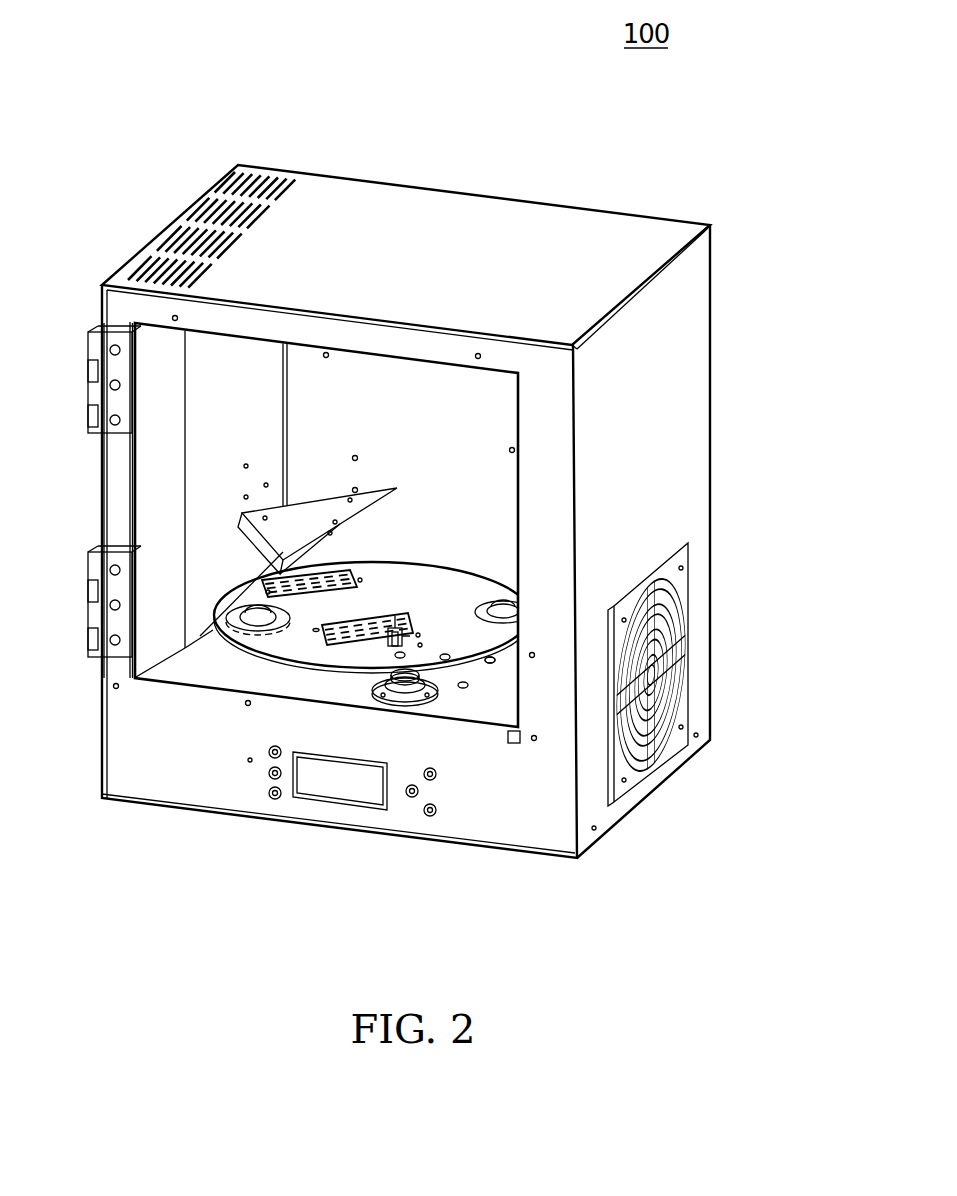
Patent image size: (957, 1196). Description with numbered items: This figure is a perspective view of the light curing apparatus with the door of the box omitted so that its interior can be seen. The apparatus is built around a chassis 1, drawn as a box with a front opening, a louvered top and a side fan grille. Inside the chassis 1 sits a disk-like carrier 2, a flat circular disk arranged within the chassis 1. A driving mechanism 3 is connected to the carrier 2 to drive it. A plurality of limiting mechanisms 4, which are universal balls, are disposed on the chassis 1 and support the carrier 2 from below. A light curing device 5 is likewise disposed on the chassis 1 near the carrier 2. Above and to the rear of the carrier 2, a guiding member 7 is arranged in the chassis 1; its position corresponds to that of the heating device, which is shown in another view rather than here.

The chassis 1 is at (726, 244).
The disk-like carrier 2 is at (457, 590).
The driving mechanism 3 is at (378, 647).
The limiting mechanisms 4 is at (440, 699).
The light curing device 5 is at (495, 650).
The guiding member 7 is at (309, 505).